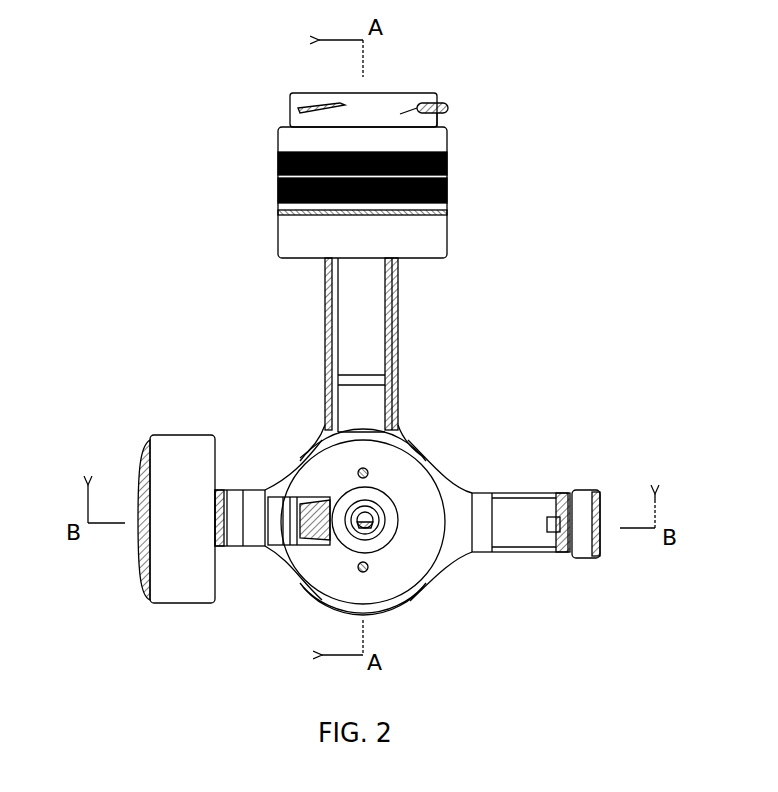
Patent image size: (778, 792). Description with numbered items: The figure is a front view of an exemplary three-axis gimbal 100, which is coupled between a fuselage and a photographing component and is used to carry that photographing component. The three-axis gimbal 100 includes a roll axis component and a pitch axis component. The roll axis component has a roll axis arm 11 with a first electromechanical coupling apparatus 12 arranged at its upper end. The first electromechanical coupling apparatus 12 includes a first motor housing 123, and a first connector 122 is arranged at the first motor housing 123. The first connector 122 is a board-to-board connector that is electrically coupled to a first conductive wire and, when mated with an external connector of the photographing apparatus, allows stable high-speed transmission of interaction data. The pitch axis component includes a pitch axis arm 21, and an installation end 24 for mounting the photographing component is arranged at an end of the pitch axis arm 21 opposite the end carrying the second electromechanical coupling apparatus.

The three-axis gimbal 100 is at (82, 21).
The first electromechanical coupling apparatus 12 is at (278, 152).
The first connector 122 is at (377, 113).
The first motor housing 123 is at (430, 143).
The roll axis arm 11 is at (368, 350).
The pitch axis arm 21 is at (253, 490).
The installation end 24 is at (193, 517).